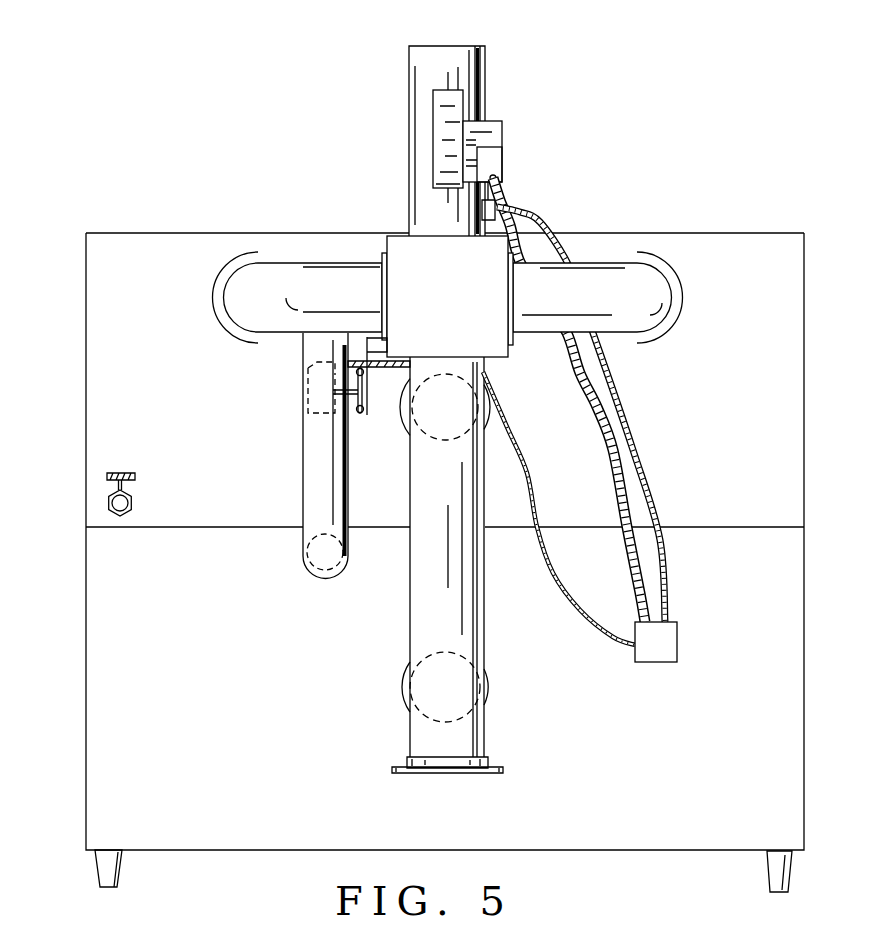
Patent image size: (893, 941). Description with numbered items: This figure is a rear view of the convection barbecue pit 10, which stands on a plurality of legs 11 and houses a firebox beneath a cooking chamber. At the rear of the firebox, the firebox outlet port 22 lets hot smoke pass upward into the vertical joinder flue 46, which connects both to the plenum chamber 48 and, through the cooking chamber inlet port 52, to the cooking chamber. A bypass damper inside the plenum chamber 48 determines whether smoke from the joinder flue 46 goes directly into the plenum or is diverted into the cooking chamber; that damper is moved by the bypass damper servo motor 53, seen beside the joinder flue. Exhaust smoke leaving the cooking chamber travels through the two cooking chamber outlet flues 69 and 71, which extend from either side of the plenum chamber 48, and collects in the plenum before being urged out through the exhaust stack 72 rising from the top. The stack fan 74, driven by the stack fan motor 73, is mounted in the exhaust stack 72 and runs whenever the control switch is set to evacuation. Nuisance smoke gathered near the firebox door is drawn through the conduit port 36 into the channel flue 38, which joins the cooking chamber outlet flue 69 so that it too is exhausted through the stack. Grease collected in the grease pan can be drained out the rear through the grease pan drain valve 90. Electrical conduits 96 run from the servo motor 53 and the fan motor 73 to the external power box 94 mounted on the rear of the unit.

The convection barbecue pit 10 is at (733, 198).
The legs 11 is at (102, 868).
The firebox outlet port 22 is at (432, 718).
The conduit port 36 is at (307, 566).
The channel flue 38 is at (315, 464).
The joinder flue 46 is at (452, 483).
The plenum chamber 48 is at (462, 304).
The cooking chamber inlet port 52 is at (435, 439).
The bypass damper servo motor 53 is at (310, 398).
The cooking chamber outlet flue 69 is at (307, 304).
The cooking chamber outlet flue 71 is at (620, 306).
The exhaust stack 72 is at (480, 72).
The stack fan motor 73 is at (503, 155).
The stack fan 74 is at (440, 121).
The grease pan drain valve 90 is at (133, 503).
The external power box 94 is at (677, 645).
The electrical conduits 96 is at (527, 475).